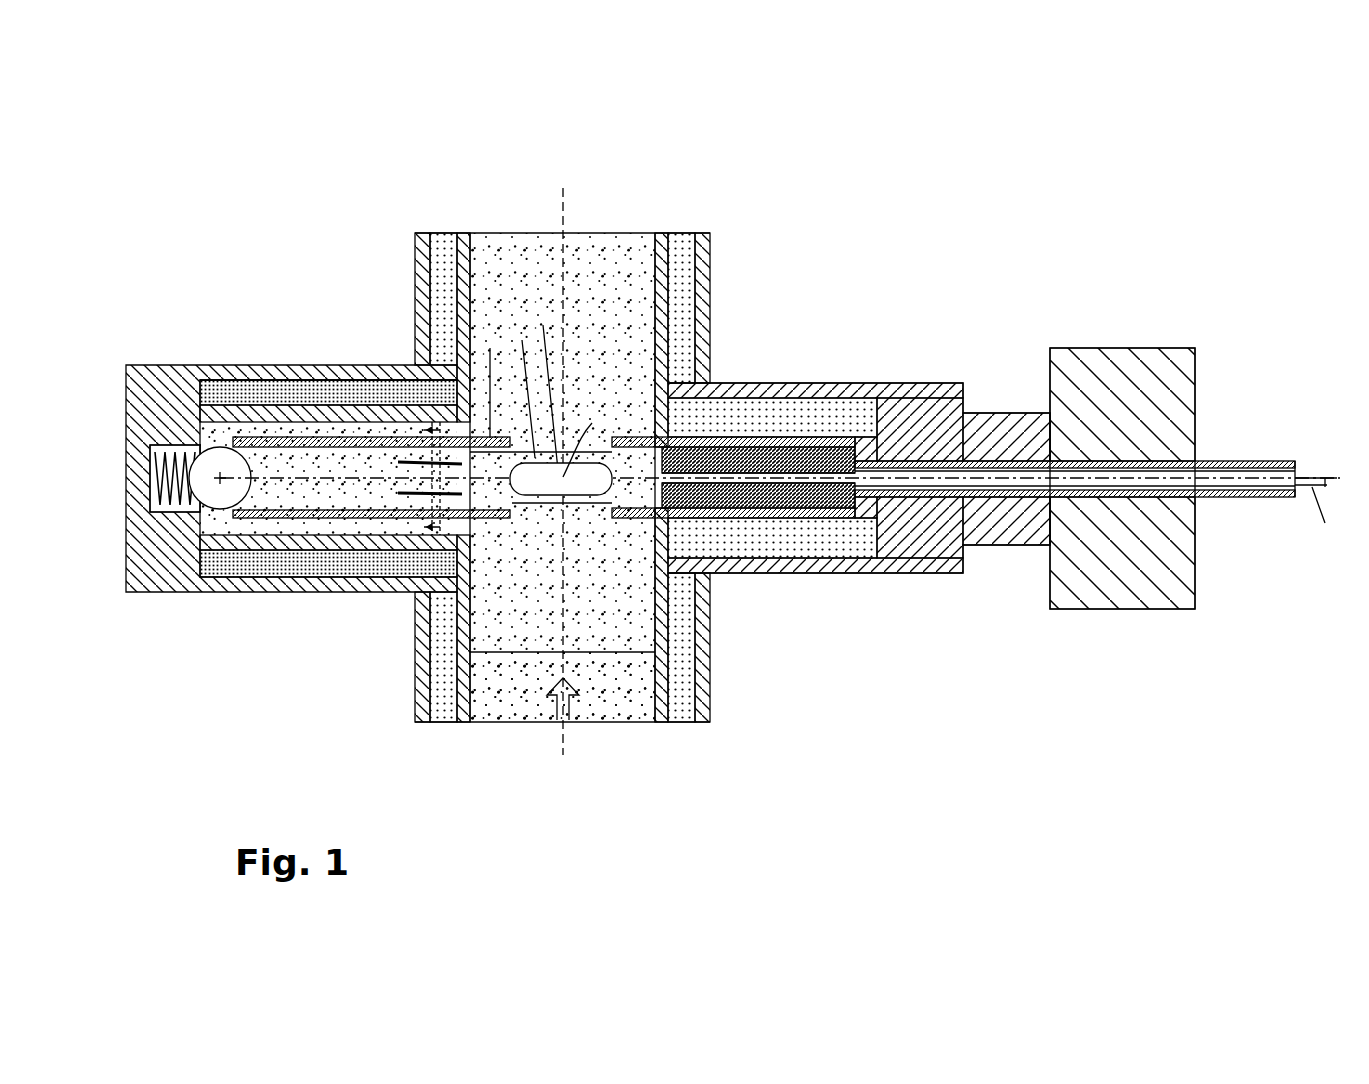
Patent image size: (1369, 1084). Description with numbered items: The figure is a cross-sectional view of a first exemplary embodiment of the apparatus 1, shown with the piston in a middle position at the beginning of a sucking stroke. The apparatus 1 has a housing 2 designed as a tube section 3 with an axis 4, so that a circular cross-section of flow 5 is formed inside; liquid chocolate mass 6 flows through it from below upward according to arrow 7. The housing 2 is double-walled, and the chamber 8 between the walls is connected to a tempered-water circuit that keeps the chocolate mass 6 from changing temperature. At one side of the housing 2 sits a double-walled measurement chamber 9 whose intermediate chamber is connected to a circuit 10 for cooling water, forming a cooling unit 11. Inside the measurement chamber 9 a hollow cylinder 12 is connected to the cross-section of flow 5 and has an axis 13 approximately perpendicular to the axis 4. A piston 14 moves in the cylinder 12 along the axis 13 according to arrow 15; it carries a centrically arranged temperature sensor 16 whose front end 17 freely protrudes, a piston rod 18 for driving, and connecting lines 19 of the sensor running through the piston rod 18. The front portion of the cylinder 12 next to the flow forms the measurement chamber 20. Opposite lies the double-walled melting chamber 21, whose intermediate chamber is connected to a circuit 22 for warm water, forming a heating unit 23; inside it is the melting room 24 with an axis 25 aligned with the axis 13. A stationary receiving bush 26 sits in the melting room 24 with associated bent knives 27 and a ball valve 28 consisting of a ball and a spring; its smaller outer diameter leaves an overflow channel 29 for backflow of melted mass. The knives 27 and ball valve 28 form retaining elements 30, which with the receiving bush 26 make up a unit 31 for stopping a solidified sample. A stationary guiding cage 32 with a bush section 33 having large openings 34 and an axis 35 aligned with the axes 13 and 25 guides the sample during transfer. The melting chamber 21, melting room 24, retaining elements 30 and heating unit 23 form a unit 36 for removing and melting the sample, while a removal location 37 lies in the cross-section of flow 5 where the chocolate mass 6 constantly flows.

The apparatus 1 is at (935, 190).
The housing 2 is at (707, 262).
The tube section 3 is at (668, 323).
The axis 4 is at (563, 260).
The cross-section of flow 5 is at (637, 652).
The liquid chocolate mass 6 is at (632, 683).
The arrow 7 is at (567, 705).
The chamber 8 is at (682, 257).
The measurement chamber 9 is at (820, 382).
The circuit for cooling water 10 is at (832, 417).
The cooling unit 11 is at (857, 423).
The hollow cylinder 12 is at (937, 475).
The axis 13 is at (985, 497).
The piston 14 is at (773, 485).
The arrow 15 is at (900, 452).
The temperature sensor 16 is at (736, 480).
The front end 17 is at (657, 560).
The piston rod 18 is at (997, 492).
The connecting lines 19 is at (1325, 525).
The measurement chamber 20 is at (813, 512).
The melting chamber 21 is at (173, 365).
The circuit for warm water 22 is at (288, 372).
The heating unit 23 is at (341, 393).
The melting room 24 is at (313, 525).
The axis 25 is at (272, 480).
The receiving bush 26 is at (290, 517).
The bent knives 27 is at (422, 492).
The ball valve 28 is at (212, 495).
The overflow channel 29 is at (302, 535).
The retaining elements 30 is at (175, 478).
The unit for stopping a solidified sample 31 is at (257, 440).
The guiding cage 32 is at (522, 340).
The bush section 33 is at (490, 348).
The large openings 34 is at (570, 477).
The axis 35 is at (592, 423).
The unit for removing a solidified sample 36 is at (211, 350).
The removal location 37 is at (543, 325).